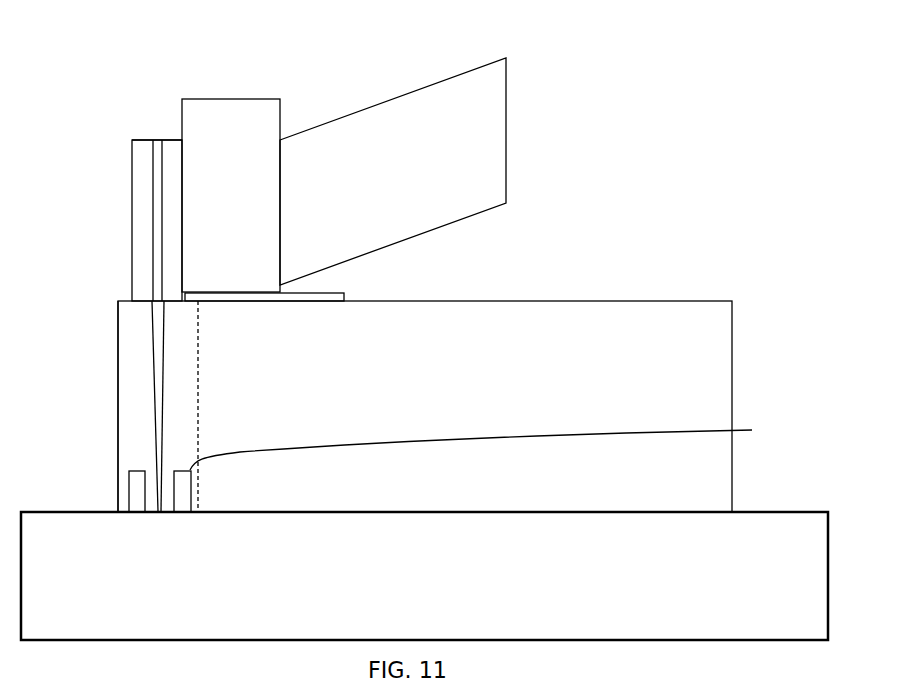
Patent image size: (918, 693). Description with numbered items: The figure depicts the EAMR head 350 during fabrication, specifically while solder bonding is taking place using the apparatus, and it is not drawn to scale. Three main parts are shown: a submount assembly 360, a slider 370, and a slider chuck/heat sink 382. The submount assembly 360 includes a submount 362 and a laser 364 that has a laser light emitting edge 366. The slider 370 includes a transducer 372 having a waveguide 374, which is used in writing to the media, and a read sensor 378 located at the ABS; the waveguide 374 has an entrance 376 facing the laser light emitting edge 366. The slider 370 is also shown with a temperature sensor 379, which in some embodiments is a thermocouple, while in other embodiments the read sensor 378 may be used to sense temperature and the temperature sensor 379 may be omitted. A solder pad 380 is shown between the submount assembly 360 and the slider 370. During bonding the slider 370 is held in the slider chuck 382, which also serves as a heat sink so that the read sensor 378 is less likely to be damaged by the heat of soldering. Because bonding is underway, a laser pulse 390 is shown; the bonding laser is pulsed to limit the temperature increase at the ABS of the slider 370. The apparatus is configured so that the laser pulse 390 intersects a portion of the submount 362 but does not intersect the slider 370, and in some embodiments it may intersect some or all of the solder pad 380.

The EAMR head 350 is at (428, 55).
The submount assembly 360 is at (112, 220).
The submount 362 is at (280, 125).
The laser 364 is at (132, 157).
The laser light emitting edge 366 is at (157, 292).
The slider 370 is at (743, 398).
The transducer 372 is at (117, 398).
The waveguide 374 is at (150, 345).
The entrance 376 is at (141, 313).
The read sensor 378 is at (495, 444).
The temperature sensor 379 is at (128, 497).
The solder pad 380 is at (328, 293).
The slider chuck/heat sink 382 is at (828, 575).
The laser pulse 390 is at (467, 220).
The air-bearing surface ABS is at (668, 502).